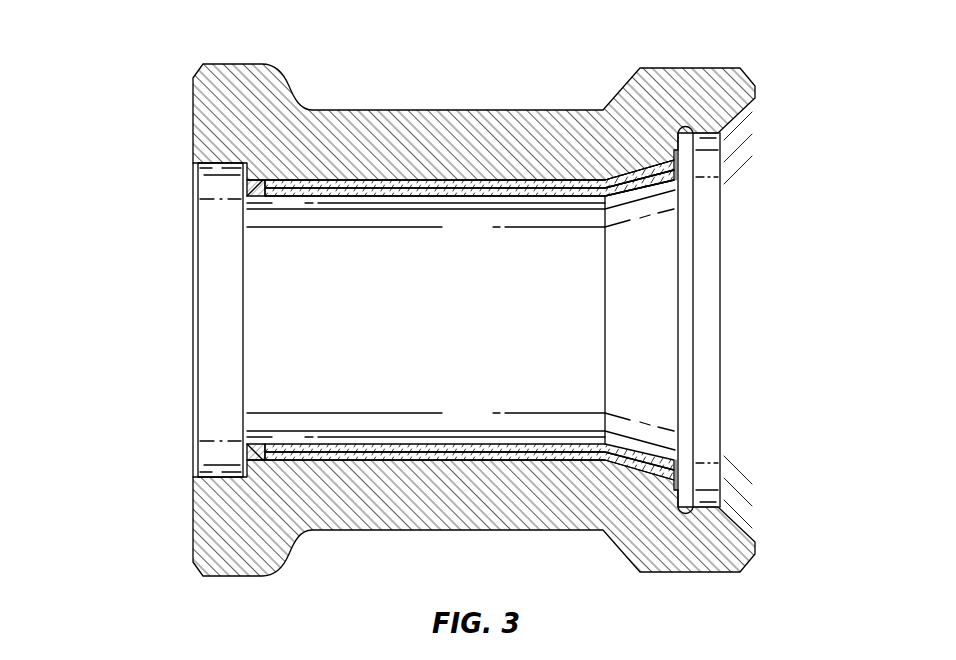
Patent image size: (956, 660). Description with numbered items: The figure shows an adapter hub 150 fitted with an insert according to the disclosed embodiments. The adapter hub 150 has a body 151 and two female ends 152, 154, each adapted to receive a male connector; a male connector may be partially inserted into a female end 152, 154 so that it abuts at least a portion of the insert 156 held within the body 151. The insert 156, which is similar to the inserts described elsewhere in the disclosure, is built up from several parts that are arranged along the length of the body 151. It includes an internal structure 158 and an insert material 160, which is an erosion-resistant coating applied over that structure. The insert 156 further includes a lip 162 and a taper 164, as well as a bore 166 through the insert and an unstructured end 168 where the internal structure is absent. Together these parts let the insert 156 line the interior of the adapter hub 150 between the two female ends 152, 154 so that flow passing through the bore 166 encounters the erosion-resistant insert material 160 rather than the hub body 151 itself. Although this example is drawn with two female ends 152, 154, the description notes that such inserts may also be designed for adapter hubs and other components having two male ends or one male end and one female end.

The adapter hub 150 is at (137, 94).
The body 151 is at (200, 155).
The female end 152 is at (280, 300).
The female end 154 is at (647, 367).
The insert 156 is at (325, 182).
The internal structure 158 is at (420, 190).
The insert material 160 is at (540, 185).
The lip 162 is at (676, 150).
The taper 164 is at (667, 183).
The bore 166 is at (263, 440).
The unstructured end 168 is at (247, 192).